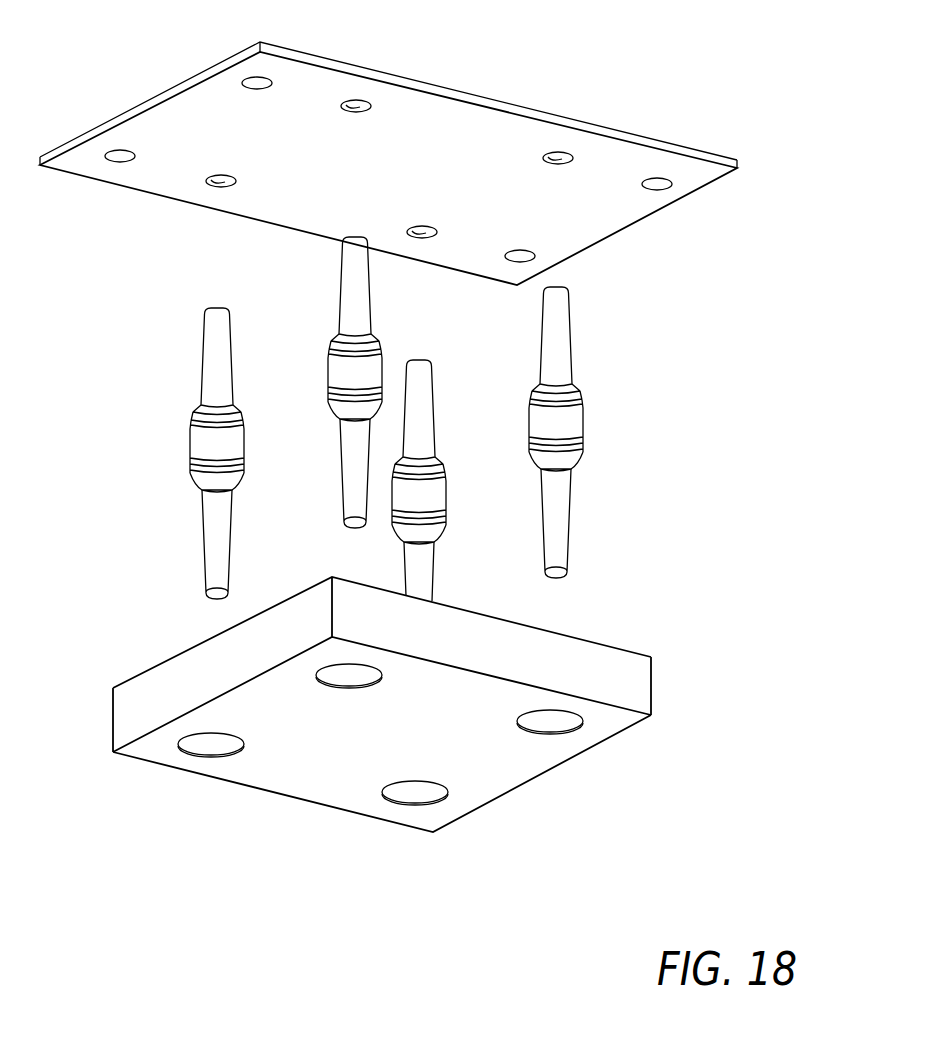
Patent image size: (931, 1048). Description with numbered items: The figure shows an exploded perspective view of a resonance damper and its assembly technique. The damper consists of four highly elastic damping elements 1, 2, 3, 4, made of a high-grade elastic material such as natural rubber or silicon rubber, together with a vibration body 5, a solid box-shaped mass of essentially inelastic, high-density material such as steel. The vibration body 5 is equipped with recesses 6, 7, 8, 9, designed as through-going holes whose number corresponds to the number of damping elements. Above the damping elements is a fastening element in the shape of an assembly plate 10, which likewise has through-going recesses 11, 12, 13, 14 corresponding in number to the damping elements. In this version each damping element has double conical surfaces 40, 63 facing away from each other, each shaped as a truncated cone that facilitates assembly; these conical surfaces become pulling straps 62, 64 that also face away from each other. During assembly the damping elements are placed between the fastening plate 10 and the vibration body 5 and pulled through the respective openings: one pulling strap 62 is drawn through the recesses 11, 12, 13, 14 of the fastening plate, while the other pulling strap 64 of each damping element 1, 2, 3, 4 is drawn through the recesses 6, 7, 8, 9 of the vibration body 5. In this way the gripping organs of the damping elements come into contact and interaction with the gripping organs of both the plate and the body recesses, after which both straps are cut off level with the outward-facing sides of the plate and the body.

The elastic damping element 1 is at (590, 412).
The elastic damping element 2 is at (305, 382).
The elastic damping element 3 is at (152, 453).
The elastic damping element 4 is at (450, 468).
The vibration body 5 is at (427, 737).
The recess 6 is at (548, 724).
The recess 7 is at (348, 679).
The recess 8 is at (210, 748).
The recess 9 is at (410, 796).
The assembly plate 10 is at (408, 155).
The recess 11 is at (352, 104).
The recess 12 is at (560, 160).
The recess 13 is at (426, 235).
The recess 14 is at (222, 182).
The conical enveloping surface 40 is at (206, 417).
The pulling strap 62 is at (212, 375).
The conical surface 63 is at (200, 482).
The pulling strap 64 is at (212, 566).